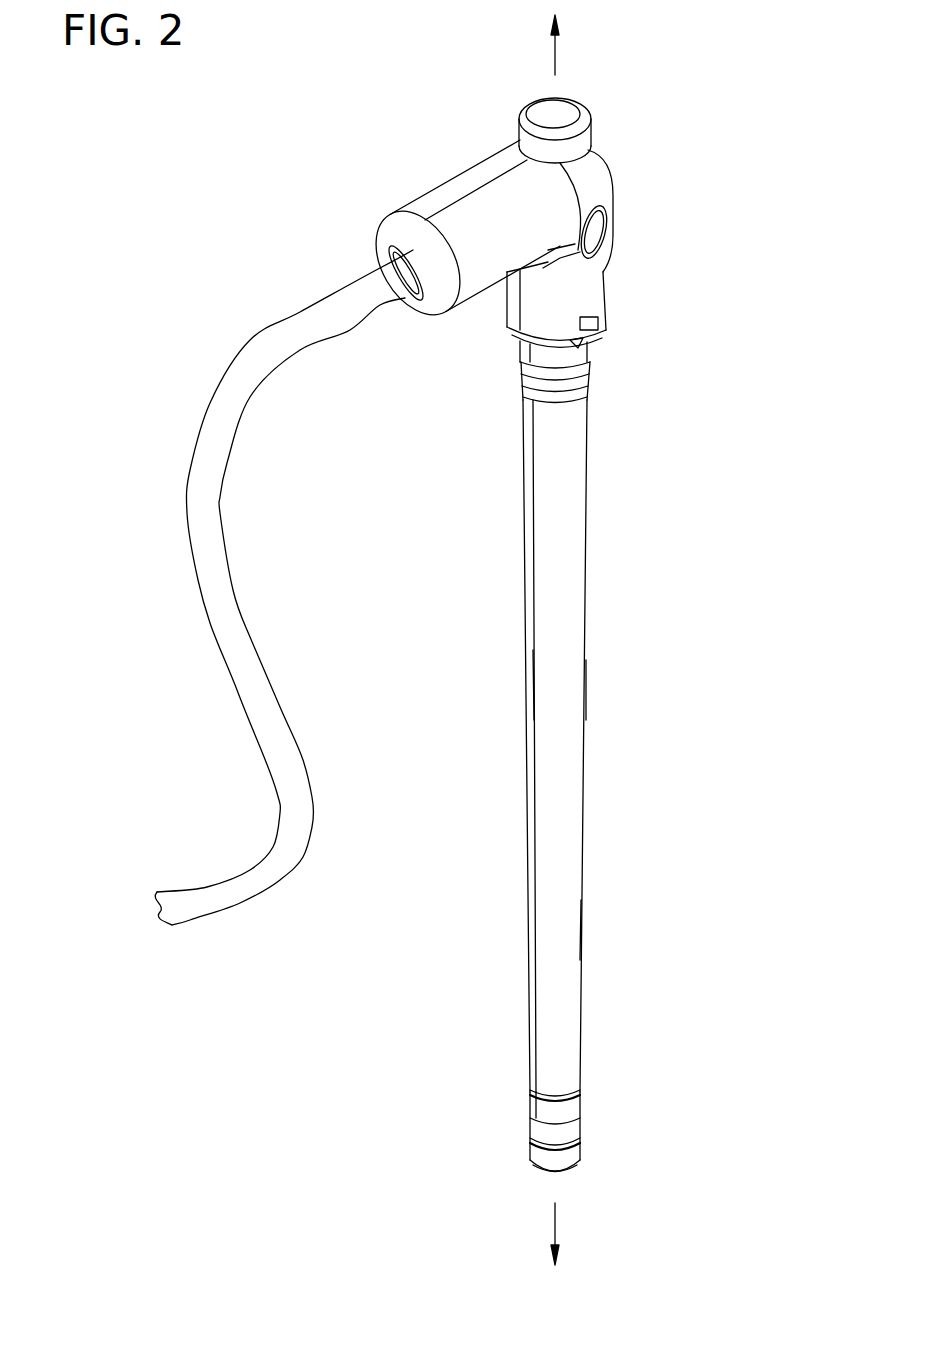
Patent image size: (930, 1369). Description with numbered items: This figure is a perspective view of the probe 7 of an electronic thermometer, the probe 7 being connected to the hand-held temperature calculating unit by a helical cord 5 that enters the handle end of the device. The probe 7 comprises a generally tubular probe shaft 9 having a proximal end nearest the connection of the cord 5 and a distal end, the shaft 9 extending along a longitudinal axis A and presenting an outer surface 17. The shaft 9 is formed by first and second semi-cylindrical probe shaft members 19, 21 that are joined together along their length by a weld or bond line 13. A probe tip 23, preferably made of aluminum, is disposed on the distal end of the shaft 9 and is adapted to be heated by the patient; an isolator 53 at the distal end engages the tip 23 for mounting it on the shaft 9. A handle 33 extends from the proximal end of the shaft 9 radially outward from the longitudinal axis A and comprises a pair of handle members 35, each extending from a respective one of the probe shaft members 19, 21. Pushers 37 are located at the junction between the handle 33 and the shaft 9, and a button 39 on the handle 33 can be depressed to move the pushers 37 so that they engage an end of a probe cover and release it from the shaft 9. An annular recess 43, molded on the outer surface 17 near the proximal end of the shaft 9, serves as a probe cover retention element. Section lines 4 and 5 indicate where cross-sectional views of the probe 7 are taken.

The helical cord 5 is at (302, 337).
The section line 4- 4 is at (685, 66).
The probe 7 is at (738, 201).
The probe shaft 9 is at (598, 685).
The weld or bond line 13 is at (530, 690).
The outer surface 17 is at (562, 558).
The first probe shaft member 19 is at (567, 930).
The second probe shaft member 21 is at (530, 578).
The probe tip 23 is at (577, 1156).
The handle 33 is at (455, 183).
The handle members 35 is at (428, 203).
The pushers 37 is at (600, 333).
The button 39 is at (571, 113).
The annular recess 43 is at (577, 380).
The isolator 53 is at (537, 1132).
The longitudinal axis A is at (555, 1223).